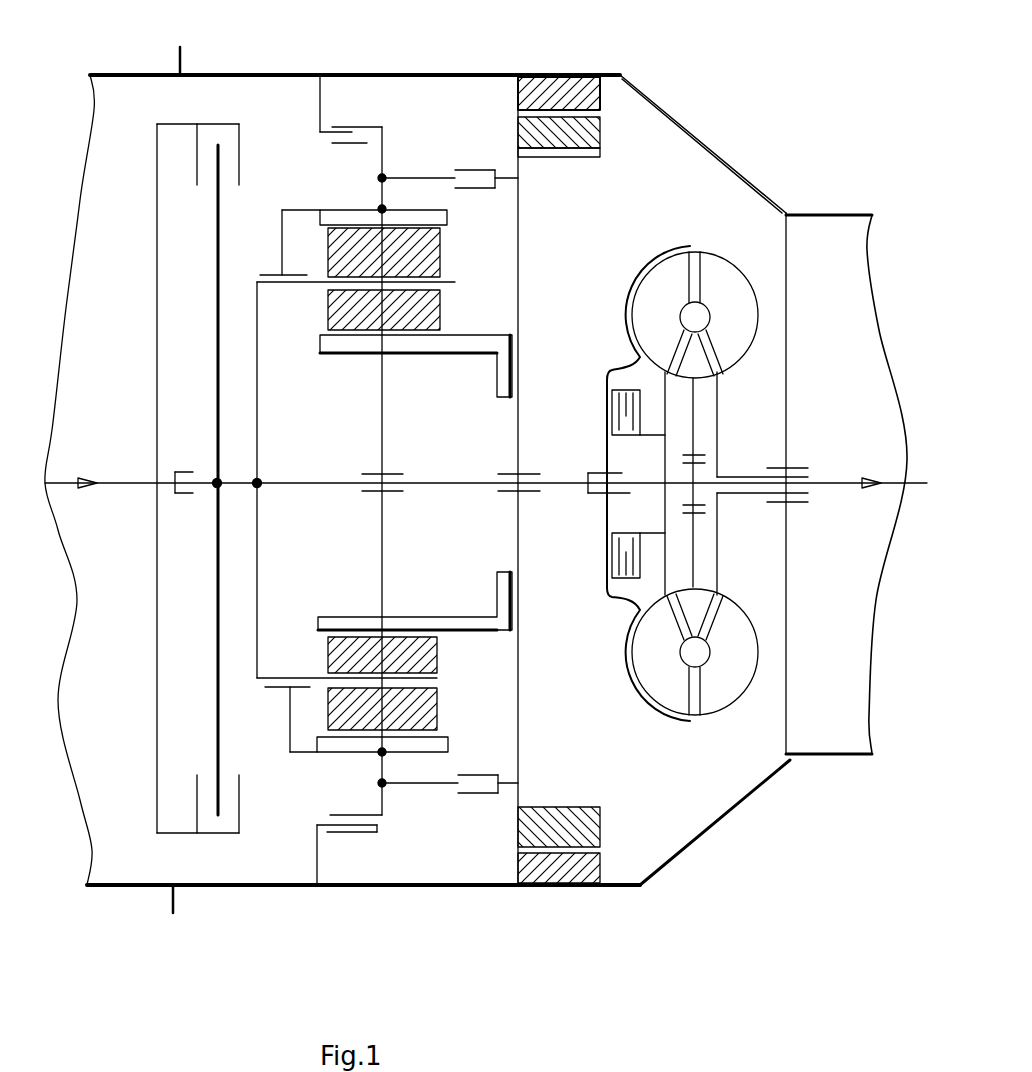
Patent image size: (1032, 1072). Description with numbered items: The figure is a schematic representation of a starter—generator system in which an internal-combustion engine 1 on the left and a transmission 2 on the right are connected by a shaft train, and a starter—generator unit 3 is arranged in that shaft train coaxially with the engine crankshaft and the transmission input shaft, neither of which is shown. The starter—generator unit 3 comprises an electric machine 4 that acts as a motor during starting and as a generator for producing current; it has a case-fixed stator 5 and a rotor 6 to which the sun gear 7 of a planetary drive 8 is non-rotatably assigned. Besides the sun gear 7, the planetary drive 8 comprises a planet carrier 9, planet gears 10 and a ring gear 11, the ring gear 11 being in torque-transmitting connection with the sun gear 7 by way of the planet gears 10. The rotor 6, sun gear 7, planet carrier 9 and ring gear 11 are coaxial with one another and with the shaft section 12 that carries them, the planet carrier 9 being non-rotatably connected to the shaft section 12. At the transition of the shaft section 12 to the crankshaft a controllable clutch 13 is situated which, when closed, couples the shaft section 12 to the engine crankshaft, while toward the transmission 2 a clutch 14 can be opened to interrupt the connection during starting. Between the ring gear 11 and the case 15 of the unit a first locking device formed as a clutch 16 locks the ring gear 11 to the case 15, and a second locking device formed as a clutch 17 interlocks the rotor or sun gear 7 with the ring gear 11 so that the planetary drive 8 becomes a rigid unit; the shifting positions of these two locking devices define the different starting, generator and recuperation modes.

The internal-combustion engine 1 is at (114, 424).
The transmission 2 is at (862, 449).
The starter—generator unit 3 is at (228, 892).
The electric machine 4 is at (528, 888).
The stator 5 is at (600, 868).
The rotor 6 is at (600, 812).
The sun gear 7 is at (347, 345).
The planetary drive 8 is at (306, 830).
The planet carrier 9 is at (258, 585).
The planet gears 10 is at (440, 315).
The ring gear 11 is at (445, 745).
The shaft section 12 is at (453, 485).
The controllable clutch 13 is at (233, 117).
The clutch 14 is at (630, 657).
The case 15 is at (447, 73).
The first controllable locking device (clutch) 16 is at (374, 126).
The second controllable locking device (clutch) 17 is at (458, 797).